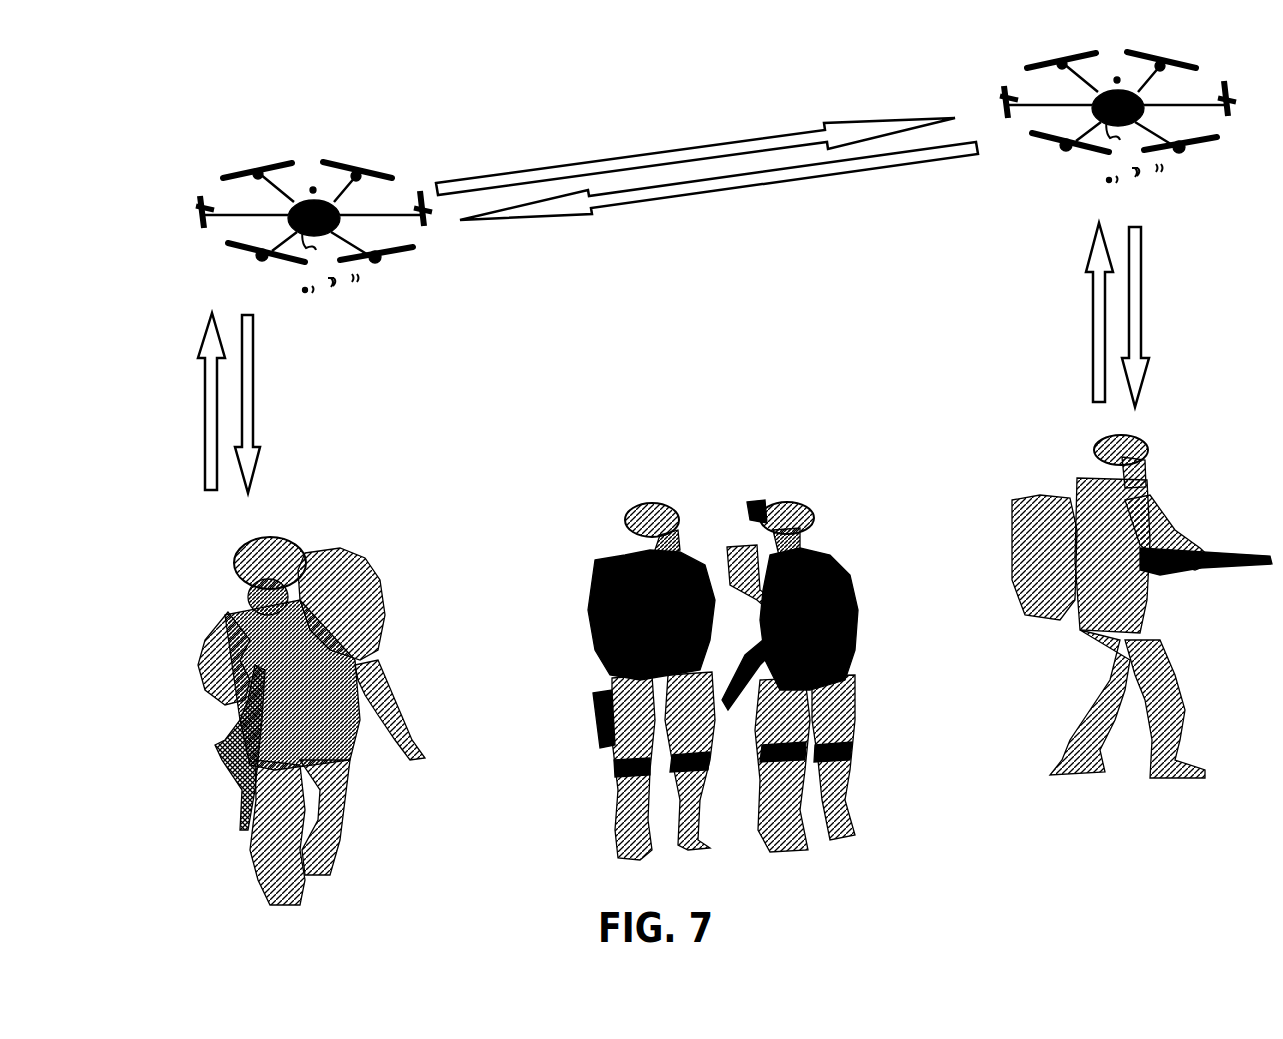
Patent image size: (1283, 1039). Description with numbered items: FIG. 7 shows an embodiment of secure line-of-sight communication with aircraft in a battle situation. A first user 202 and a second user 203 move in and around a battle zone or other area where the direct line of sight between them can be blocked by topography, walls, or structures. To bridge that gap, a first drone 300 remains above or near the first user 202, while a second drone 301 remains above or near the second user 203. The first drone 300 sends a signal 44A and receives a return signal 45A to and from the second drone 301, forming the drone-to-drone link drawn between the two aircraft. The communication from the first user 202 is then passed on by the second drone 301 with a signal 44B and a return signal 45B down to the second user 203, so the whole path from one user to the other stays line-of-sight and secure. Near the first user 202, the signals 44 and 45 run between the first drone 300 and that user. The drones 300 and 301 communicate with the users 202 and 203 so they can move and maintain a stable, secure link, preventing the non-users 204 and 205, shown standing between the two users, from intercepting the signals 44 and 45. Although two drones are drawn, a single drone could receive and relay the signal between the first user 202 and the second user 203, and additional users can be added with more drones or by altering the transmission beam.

The first drone 300 is at (1177, 102).
The second drone 301 is at (268, 197).
The return signal 45A is at (713, 143).
The signal 44A is at (702, 195).
The return signal 45B is at (208, 435).
The signal 44B is at (253, 417).
The signal 44 is at (1093, 320).
The signal 45 is at (1143, 313).
The first user 202 is at (1035, 593).
The second user 203 is at (347, 563).
The non-user 204 is at (590, 647).
The non-user 205 is at (837, 560).